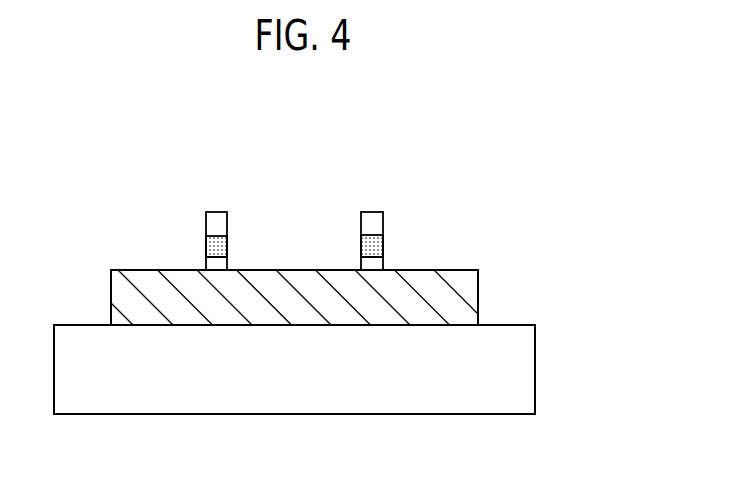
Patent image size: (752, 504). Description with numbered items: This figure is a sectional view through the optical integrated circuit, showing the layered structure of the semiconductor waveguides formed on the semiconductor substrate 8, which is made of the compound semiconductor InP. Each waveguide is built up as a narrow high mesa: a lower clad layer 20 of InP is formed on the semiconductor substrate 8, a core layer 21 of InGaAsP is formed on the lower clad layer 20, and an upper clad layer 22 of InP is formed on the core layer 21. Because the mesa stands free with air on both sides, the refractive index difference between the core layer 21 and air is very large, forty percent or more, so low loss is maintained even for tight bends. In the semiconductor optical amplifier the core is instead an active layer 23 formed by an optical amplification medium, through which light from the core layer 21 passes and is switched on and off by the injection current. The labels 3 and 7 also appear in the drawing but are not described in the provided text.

The semiconductor module 3 is at (310, 172).
The base plate 7 is at (283, 414).
The semiconductor substrate 8 is at (462, 292).
The lower clad layer 20 is at (194, 265).
The core layer 21 is at (384, 243).
The upper clad layer 22 is at (220, 212).
The active layer 23 is at (205, 243).